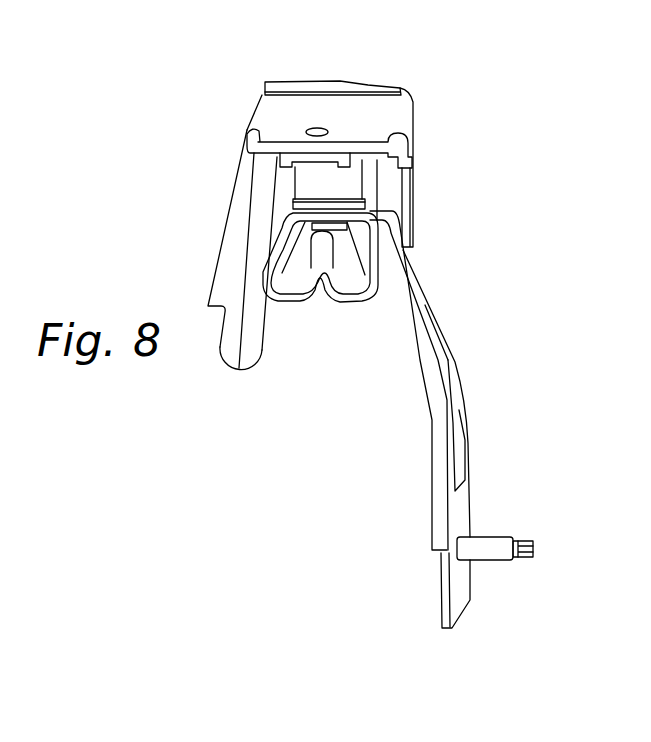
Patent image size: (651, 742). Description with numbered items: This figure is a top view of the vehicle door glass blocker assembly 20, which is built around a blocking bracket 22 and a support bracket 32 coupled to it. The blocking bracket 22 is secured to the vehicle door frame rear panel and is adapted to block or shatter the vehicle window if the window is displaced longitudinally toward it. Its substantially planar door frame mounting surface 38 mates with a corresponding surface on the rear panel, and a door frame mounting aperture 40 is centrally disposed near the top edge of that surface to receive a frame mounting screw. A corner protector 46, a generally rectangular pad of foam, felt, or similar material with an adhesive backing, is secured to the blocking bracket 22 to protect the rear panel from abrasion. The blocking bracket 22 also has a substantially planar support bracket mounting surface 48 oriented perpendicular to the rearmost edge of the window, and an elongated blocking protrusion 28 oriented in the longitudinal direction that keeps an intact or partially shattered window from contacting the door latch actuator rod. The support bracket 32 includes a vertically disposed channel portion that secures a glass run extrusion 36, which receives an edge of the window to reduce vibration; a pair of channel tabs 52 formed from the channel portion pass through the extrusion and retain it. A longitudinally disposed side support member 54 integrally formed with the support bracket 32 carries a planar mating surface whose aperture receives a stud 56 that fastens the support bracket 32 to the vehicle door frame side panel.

The vehicle door glass blocker assembly 20 is at (458, 247).
The blocking bracket 22 is at (198, 133).
The blocking protrusion 28 is at (232, 341).
The support bracket 32 is at (452, 313).
The glass run extrusion 36 is at (352, 307).
The door frame mounting surface 38 is at (388, 115).
The door frame mounting aperture 40 is at (315, 128).
The corner protector 46 is at (353, 83).
The support bracket mounting surface 48 is at (340, 189).
The channel tabs 52 is at (315, 262).
The side support member 54 is at (468, 452).
The stud 56 is at (500, 548).